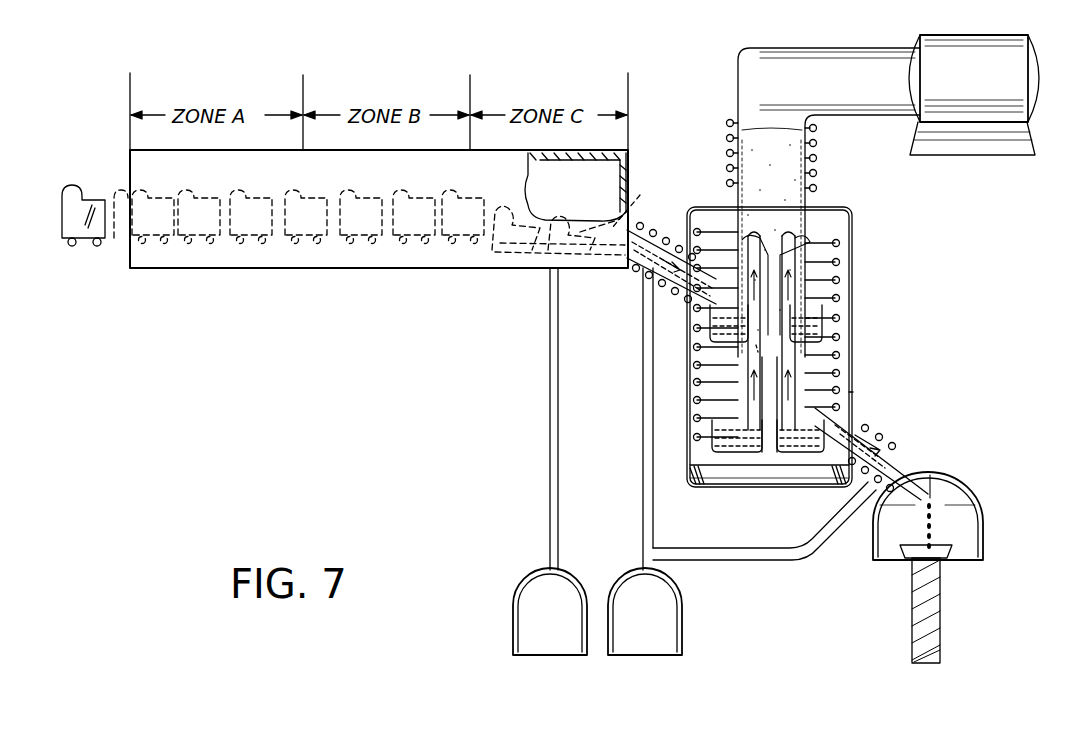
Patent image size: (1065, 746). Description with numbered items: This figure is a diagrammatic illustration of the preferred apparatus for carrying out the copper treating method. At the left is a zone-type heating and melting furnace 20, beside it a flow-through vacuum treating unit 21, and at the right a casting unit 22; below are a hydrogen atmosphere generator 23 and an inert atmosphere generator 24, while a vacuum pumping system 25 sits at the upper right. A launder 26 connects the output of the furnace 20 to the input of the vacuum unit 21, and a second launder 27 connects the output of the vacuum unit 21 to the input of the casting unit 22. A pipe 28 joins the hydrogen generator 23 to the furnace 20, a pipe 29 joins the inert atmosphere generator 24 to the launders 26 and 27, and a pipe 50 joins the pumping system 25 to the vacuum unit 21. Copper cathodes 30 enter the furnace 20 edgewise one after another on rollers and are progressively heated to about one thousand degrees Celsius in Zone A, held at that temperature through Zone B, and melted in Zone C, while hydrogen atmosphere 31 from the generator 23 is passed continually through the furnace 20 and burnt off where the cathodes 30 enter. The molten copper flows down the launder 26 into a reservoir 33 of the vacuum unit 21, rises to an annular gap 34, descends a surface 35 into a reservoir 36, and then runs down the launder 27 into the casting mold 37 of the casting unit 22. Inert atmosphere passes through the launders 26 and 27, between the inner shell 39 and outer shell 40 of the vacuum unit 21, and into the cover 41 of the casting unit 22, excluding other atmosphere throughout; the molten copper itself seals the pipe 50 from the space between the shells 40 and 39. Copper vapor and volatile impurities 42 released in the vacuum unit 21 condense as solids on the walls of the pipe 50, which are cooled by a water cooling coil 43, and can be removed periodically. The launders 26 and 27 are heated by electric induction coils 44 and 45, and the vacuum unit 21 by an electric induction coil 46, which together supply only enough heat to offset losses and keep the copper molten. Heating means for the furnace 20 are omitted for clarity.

The zone-type heating and melting furnace 20 is at (236, 270).
The flow through type vacuum treating unit 21 is at (858, 213).
The casting unit 22 is at (990, 509).
The hydrogen atmosphere generator 23 is at (532, 580).
The inert atmosphere generator 24 is at (627, 580).
The vacuum pumping system 25 is at (975, 45).
The launder 26 is at (690, 300).
The launder 27 is at (900, 462).
The pipe 28 is at (559, 430).
The pipe 29 is at (648, 542).
The copper cathodes 30 is at (125, 200).
The hydrogen atmosphere 31 is at (582, 197).
The reservoir 33 is at (815, 308).
The annular gap 34 is at (795, 296).
The surface 35 is at (793, 254).
The reservoir 36 is at (758, 455).
The casting mold 37 is at (945, 572).
The inner shell 39 is at (852, 362).
The outer shell 40 is at (853, 392).
The cover 41 is at (950, 480).
The copper vapor and volatile impurities 42 is at (772, 163).
The water cooling coil 43 is at (818, 190).
The electric induction coil 44 is at (668, 238).
The electric induction coil 45 is at (882, 440).
The electric induction coil 46 is at (838, 334).
The pipe 50 is at (758, 40).